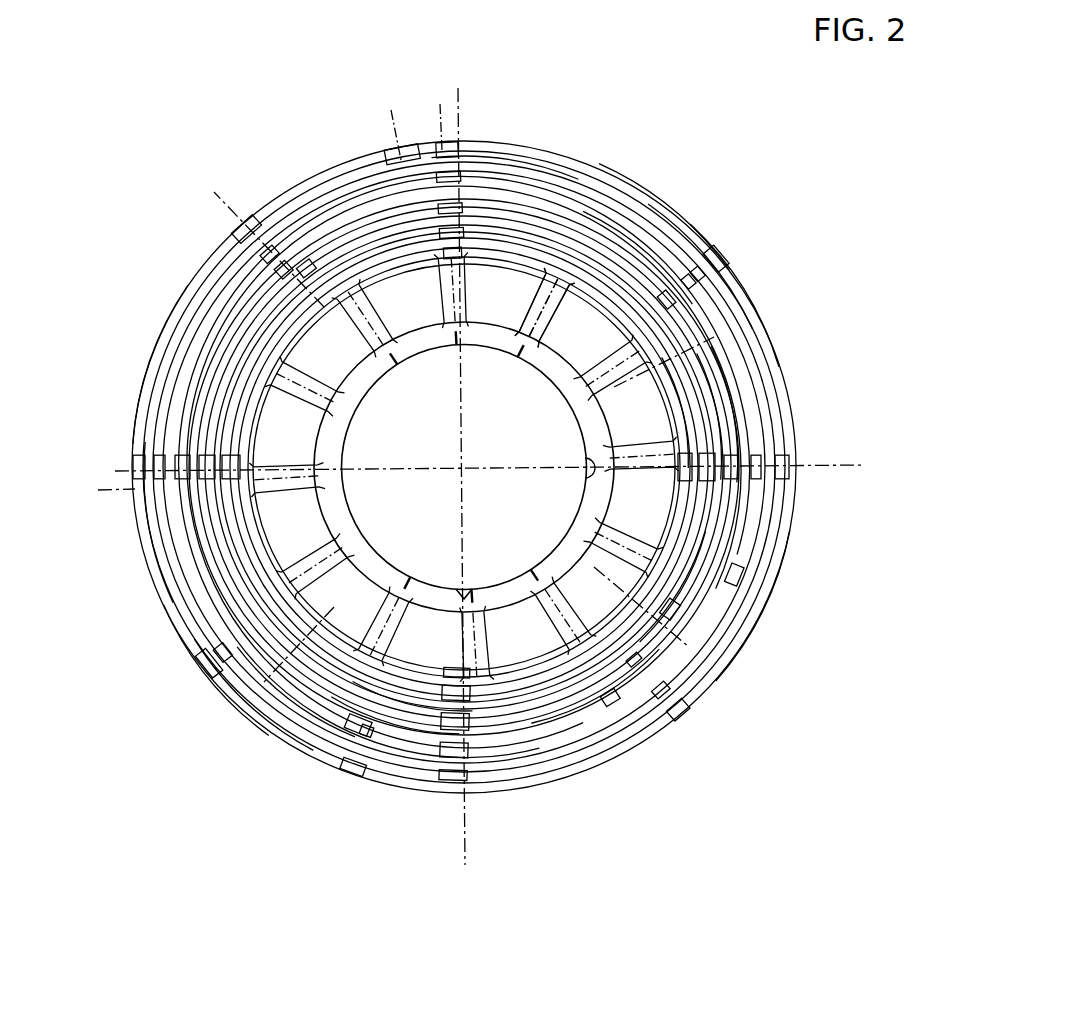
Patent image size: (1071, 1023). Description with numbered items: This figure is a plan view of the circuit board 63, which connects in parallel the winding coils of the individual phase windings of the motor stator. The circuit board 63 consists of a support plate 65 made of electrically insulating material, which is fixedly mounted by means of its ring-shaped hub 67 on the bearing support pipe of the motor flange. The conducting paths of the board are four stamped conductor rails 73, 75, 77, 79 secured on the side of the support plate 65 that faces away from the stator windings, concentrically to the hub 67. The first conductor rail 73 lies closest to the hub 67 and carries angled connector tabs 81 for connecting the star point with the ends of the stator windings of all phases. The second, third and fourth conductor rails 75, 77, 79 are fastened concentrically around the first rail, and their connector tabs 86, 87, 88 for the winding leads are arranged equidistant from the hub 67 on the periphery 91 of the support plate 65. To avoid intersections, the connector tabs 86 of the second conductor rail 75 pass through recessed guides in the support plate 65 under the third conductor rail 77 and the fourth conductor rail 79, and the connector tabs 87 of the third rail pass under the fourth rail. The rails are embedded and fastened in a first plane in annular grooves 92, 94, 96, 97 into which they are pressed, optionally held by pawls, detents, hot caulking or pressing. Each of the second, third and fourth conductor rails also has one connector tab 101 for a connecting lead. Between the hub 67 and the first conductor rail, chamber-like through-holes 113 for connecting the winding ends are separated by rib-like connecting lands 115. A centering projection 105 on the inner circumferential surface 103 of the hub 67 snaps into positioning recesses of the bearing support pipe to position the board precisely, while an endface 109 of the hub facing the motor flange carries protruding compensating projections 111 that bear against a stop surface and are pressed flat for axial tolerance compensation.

The circuit board 63 is at (677, 200).
The support plate 65 is at (748, 293).
The hub 67 is at (715, 420).
The first conductor rail 73 is at (690, 486).
The second conductor rail 75 is at (728, 416).
The third conductor rail 77 is at (640, 255).
The fourth conductor rail 79 is at (510, 165).
The angled connector tabs 81 is at (682, 415).
The connector tabs 86 is at (152, 360).
The connector tabs 87 is at (205, 677).
The connector tabs 88 is at (148, 524).
The periphery 91 is at (762, 614).
The annular groove 92 is at (410, 700).
The annular groove 94 is at (388, 723).
The annular groove 96 is at (290, 700).
The annular grooves 97 is at (240, 706).
The connector tab 101 is at (443, 792).
The inner circumferential surface 103 is at (354, 522).
The centering projection 105 is at (469, 592).
The endface 109 is at (597, 501).
The compensating projections 111 is at (352, 393).
The through-holes 113 is at (712, 263).
The connecting lands 115 is at (557, 322).